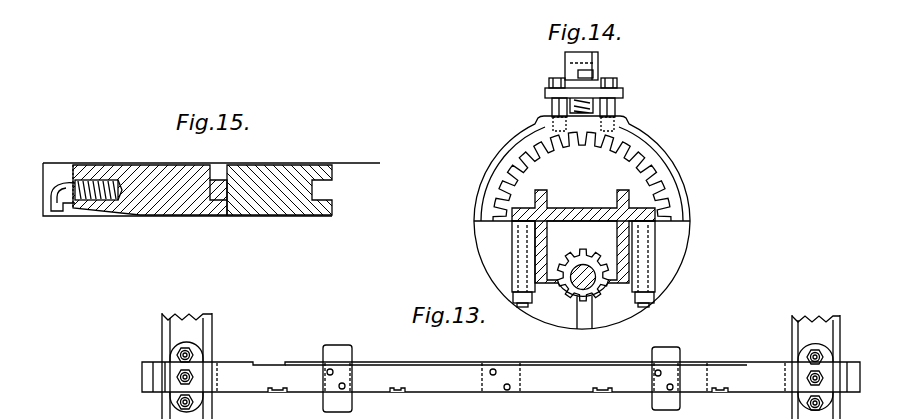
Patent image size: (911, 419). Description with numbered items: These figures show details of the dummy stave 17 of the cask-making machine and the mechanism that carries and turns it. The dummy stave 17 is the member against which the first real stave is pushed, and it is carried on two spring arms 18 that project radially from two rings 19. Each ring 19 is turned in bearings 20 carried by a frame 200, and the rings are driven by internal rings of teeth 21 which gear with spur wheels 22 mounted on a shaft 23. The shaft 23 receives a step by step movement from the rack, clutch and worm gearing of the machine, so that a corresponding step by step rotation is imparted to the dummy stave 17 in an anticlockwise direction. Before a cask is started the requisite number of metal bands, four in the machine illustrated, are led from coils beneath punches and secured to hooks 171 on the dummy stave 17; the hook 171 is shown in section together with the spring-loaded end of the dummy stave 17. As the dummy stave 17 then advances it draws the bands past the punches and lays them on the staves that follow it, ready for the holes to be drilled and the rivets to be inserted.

In FIG. 15, the dummy stave 17 is at (166, 197).
In FIG. 14, the dummy stave 17 is at (584, 54).
In FIG. 13, the dummy stave 17 is at (501, 378).
In FIG. 15, the hooks 171 is at (56, 182).
In FIG. 13, the hooks 171 is at (278, 389).
In FIG. 14, the spring arms 18 is at (575, 105).
In FIG. 13, the spring arms 18 is at (194, 375).
In FIG. 14, the rings 19 is at (647, 155).
In FIG. 13, the rings 19 is at (173, 331).
In FIG. 14, the bearings 20 is at (580, 264).
In FIG. 14, the internal rings of teeth 21 is at (583, 140).
In FIG. 14, the spur wheels 22 is at (583, 256).
In FIG. 14, the shaft 23 is at (591, 284).
In FIG. 14, the frame 200 is at (579, 208).